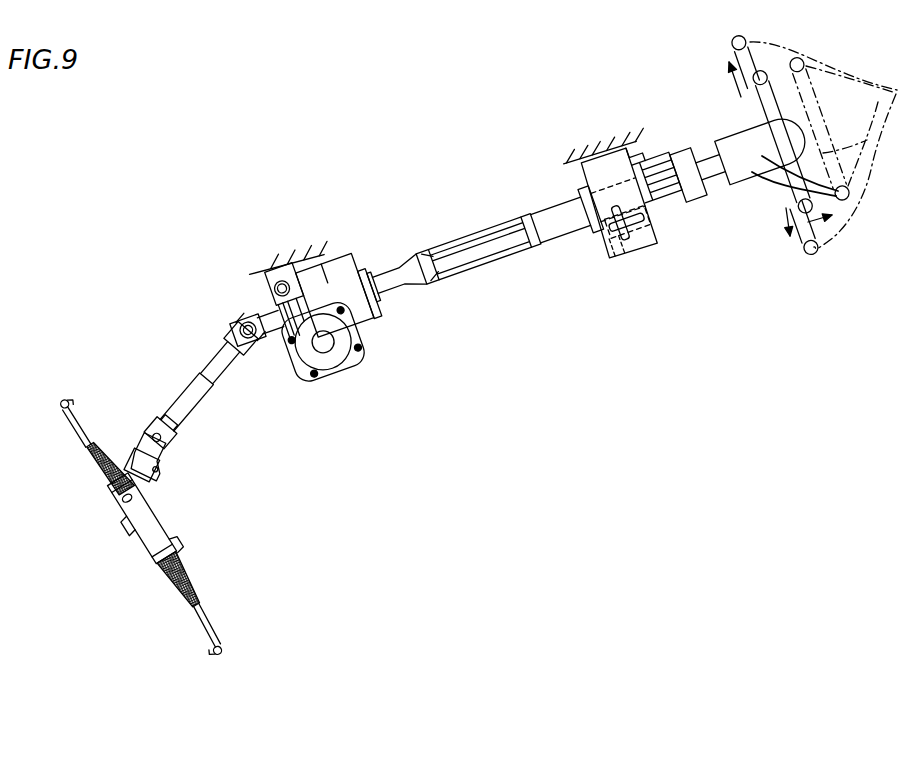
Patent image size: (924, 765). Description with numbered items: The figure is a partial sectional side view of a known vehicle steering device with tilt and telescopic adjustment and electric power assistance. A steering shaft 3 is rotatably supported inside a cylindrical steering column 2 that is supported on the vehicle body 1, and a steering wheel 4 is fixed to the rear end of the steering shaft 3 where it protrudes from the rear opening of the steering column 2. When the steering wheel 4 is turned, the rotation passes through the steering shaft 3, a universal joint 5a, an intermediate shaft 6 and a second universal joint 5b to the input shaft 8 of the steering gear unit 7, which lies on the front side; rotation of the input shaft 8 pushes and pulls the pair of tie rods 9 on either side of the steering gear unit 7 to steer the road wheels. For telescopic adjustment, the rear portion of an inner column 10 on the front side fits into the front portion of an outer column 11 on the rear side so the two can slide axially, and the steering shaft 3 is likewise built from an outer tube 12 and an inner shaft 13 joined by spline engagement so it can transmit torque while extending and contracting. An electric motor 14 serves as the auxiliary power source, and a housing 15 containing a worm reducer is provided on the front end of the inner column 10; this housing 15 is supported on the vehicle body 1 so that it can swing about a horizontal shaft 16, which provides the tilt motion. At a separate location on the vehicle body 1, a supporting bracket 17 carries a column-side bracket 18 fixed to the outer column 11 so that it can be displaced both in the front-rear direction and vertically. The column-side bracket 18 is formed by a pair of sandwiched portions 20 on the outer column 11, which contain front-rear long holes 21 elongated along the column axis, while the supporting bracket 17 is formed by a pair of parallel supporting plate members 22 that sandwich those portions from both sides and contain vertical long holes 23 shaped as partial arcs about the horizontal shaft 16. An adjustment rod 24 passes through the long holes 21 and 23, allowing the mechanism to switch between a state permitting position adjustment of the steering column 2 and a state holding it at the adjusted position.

The vehicle body 1 is at (282, 252).
The steering column 2 is at (497, 262).
The steering shaft 3 is at (467, 250).
The steering wheel 4 is at (772, 101).
The universal joint 5a is at (243, 313).
The universal joint 5b is at (146, 418).
The intermediate shaft 6 is at (190, 402).
The steering gear unit 7 is at (150, 535).
The input shaft 8 is at (153, 478).
The tie rods 9 is at (67, 410).
The inner column 10 is at (412, 280).
The outer column 11 is at (695, 188).
The outer tube 12 is at (672, 198).
The inner shaft 13 is at (438, 242).
The electric motor 14 is at (338, 355).
The housing 15 is at (353, 268).
The horizontal shaft 16 is at (275, 268).
The supporting bracket 17 is at (623, 172).
The column-side bracket 18 is at (648, 226).
The sandwiched portions 20 is at (582, 232).
The front-rear long holes 21 is at (607, 252).
The supporting plate members 22 is at (652, 238).
The vertical long holes 23 is at (640, 244).
The adjustment rod 24 is at (642, 187).